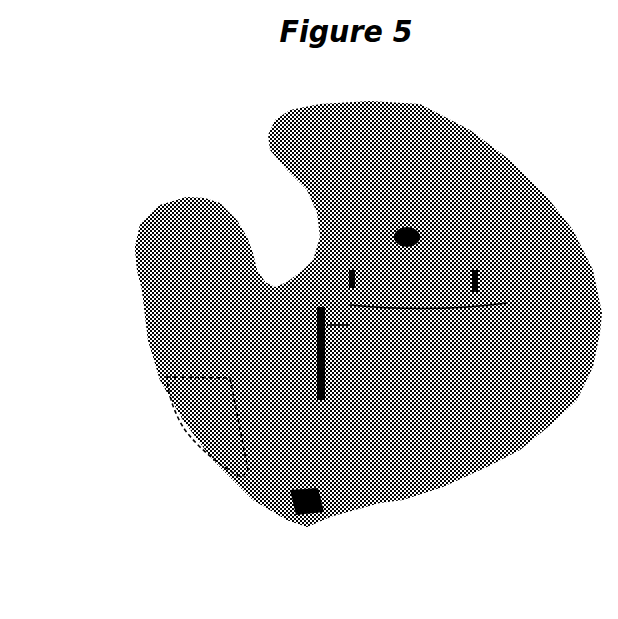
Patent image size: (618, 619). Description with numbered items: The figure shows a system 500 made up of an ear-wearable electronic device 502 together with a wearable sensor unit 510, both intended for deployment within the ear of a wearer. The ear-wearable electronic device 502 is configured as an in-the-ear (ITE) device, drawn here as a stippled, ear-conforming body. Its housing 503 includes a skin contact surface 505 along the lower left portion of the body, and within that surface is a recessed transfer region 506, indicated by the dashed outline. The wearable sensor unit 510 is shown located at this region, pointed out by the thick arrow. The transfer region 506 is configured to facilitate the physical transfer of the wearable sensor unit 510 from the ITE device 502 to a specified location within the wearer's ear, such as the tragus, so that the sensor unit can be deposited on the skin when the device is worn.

The system 500 is at (315, 334).
The ear-wearable electronic device 502 is at (495, 165).
The housing 503 is at (155, 332).
The skin contact surface 505 is at (249, 479).
The recessed transfer region 506 is at (136, 398).
The wearable sensor unit 510 is at (196, 423).